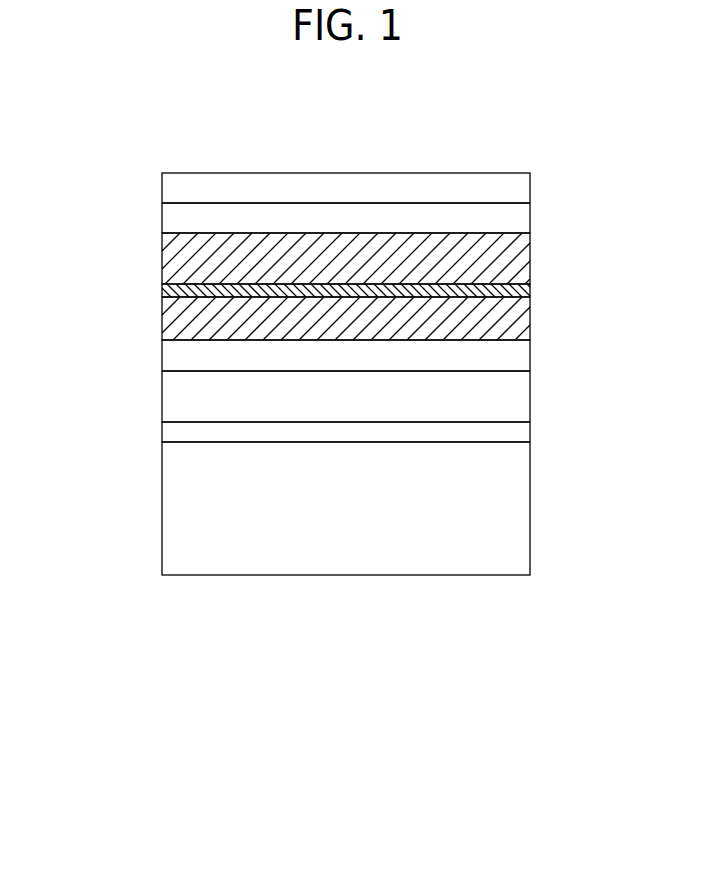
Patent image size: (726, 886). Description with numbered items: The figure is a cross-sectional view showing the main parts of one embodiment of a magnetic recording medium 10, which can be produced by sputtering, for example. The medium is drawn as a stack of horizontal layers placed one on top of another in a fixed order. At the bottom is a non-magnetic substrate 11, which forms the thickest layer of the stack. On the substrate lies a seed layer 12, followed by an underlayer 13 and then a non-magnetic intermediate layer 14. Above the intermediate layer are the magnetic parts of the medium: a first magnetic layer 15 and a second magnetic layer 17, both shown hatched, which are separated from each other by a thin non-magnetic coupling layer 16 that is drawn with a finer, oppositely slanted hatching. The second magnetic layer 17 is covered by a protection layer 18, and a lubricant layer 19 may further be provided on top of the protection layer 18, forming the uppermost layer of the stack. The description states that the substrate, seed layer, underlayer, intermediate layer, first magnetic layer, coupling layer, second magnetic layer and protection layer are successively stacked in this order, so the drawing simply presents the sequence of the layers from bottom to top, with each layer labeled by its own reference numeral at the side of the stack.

The magnetic recording medium 10 is at (106, 389).
The non-magnetic substrate 11 is at (520, 509).
The seed layer 12 is at (520, 436).
The underlayer 13 is at (520, 396).
The non-magnetic intermediate layer 14 is at (520, 356).
The first magnetic layer 15 is at (162, 317).
The non-magnetic coupling layer 16 is at (162, 288).
The second magnetic layer 17 is at (520, 259).
The protection layer 18 is at (520, 221).
The lubricant layer 19 is at (520, 188).